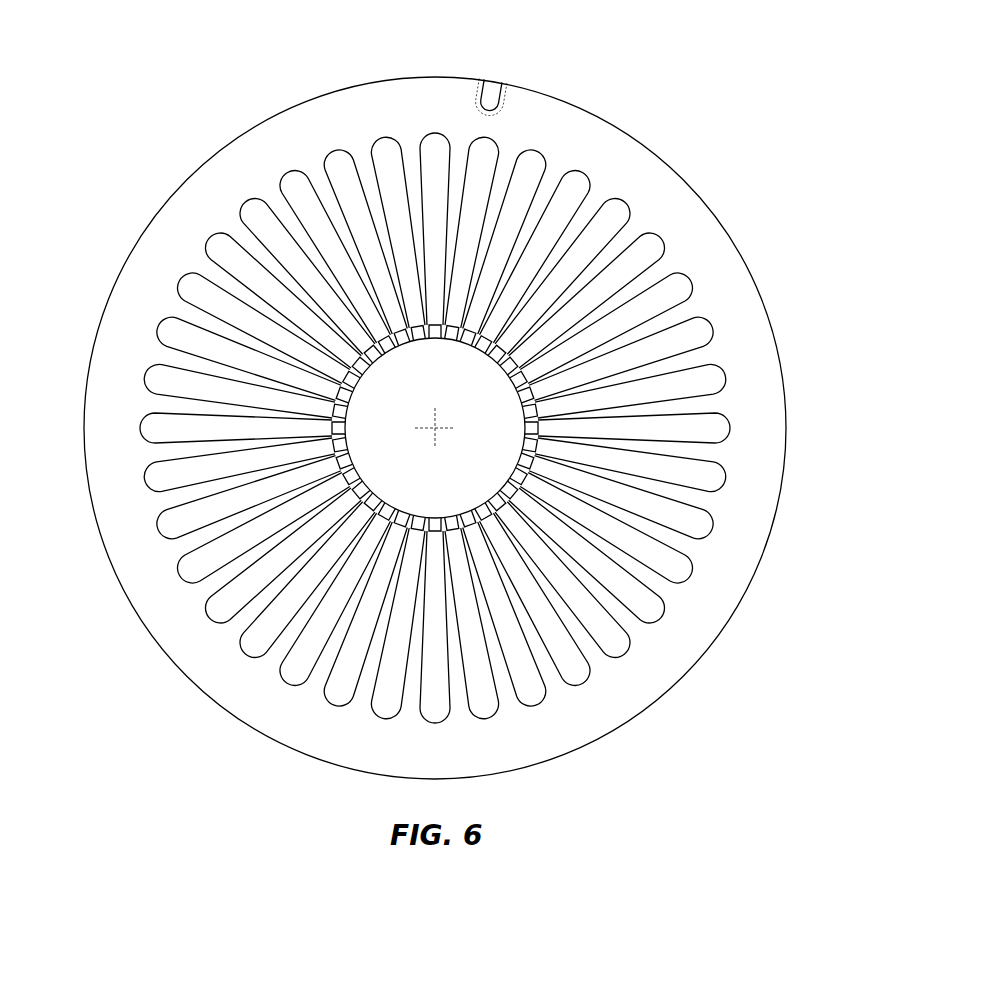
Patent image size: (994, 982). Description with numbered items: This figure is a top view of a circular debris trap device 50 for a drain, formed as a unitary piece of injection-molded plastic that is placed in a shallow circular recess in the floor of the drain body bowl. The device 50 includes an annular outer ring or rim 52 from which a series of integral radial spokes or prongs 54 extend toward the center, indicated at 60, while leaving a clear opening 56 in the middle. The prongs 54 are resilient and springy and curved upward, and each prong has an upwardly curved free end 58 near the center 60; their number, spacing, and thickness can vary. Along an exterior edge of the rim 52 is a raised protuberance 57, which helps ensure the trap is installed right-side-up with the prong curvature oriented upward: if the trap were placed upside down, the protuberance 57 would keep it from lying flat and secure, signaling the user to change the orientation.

The debris trap device 50 is at (147, 187).
The annular outer ring 52 is at (763, 422).
The radial prongs 54 is at (445, 283).
The clear opening 56 is at (427, 480).
The raised protuberance 57 is at (490, 92).
The free end 58 is at (344, 436).
The center 60 is at (435, 428).